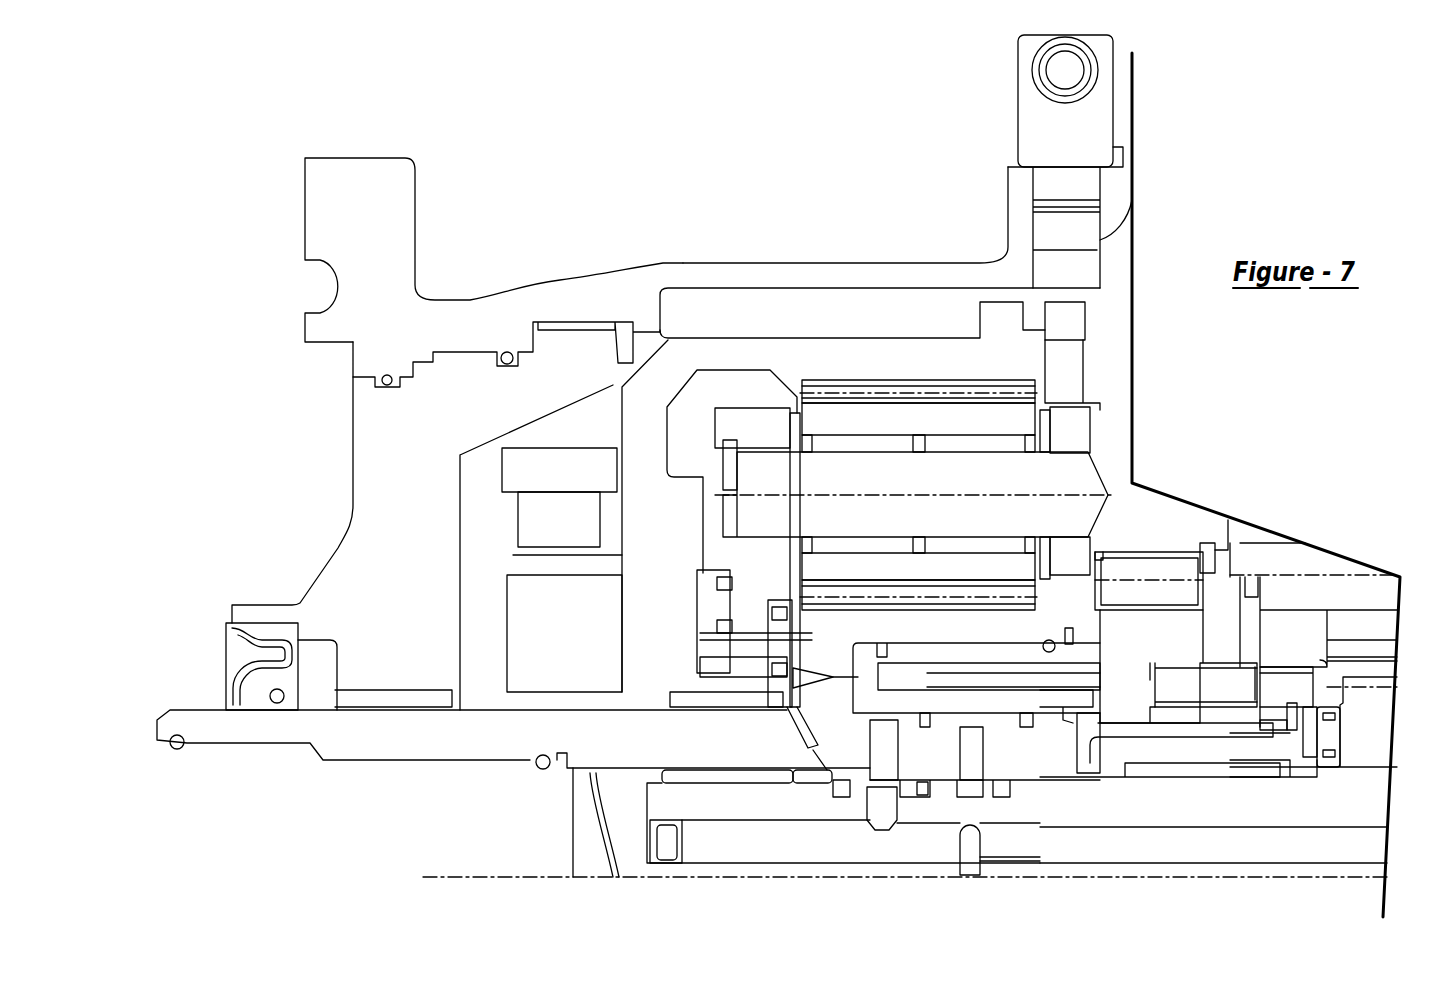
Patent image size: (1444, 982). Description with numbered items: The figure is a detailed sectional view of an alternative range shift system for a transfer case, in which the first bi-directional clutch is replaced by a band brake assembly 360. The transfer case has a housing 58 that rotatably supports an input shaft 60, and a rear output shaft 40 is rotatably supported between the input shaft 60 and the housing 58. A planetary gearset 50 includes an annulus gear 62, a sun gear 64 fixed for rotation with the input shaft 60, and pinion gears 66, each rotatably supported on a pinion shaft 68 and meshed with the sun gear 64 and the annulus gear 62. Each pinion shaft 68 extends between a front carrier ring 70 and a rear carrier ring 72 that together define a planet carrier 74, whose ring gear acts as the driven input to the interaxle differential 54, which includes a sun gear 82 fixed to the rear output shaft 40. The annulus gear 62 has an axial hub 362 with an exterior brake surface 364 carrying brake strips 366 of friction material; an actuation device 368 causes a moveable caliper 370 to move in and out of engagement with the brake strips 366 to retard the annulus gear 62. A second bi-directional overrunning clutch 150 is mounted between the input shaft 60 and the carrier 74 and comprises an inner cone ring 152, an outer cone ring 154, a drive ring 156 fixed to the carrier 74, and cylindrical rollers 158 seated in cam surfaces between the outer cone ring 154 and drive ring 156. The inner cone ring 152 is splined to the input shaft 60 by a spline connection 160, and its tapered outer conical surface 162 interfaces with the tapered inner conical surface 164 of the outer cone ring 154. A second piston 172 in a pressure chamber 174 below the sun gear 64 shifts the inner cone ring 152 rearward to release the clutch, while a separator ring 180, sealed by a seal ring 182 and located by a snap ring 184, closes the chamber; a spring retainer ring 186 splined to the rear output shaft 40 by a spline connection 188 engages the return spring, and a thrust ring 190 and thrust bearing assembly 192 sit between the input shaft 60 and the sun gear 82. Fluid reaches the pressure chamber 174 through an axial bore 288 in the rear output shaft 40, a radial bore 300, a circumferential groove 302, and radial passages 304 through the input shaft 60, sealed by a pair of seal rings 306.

The rear output shaft 40 is at (1193, 807).
The planetary gearset 50 is at (855, 333).
The interaxle differential 54 is at (1310, 562).
The housing 58 is at (390, 183).
The input shaft 60 is at (265, 732).
The annulus gear 62 is at (960, 358).
The sun gear 64 is at (812, 637).
The pinion gears 66 is at (1013, 423).
The pinion shaft 68 is at (1060, 473).
The front carrier ring 70 is at (763, 430).
The rear carrier ring 72 is at (1067, 358).
The planet carrier 74 is at (1148, 510).
The sun gear 82 is at (1370, 732).
The second bi-directional overrunning clutch 150 is at (1141, 745).
The inner cone ring 152 is at (1154, 651).
The outer cone ring 154 is at (1152, 607).
The drive ring 156 is at (1130, 557).
The cylindrical rollers 158 is at (1143, 570).
The spline connection 160 is at (1187, 725).
The tapered outer conical surface 162 is at (1177, 613).
The tapered inner conical surface 164 is at (1118, 627).
The second piston 172 is at (895, 707).
The pressure chamber 174 is at (853, 710).
The separator ring 180 is at (1035, 667).
The seal ring 182 is at (1048, 640).
The snap ring 184 is at (1082, 596).
The spring retainer ring 186 is at (1277, 680).
The spline connection 188 is at (1275, 733).
The thrust ring 190 is at (1308, 740).
The thrust bearing assembly 192 is at (1330, 733).
The axial bore 288 is at (770, 843).
The radial bore 300 is at (882, 833).
The circumferential groove 302 is at (880, 800).
The radial passages 304 is at (897, 737).
The seal rings 306 is at (833, 789).
The band brake assembly 360 is at (495, 517).
The axial hub 362 is at (595, 648).
The exterior brake surface 364 is at (583, 567).
The brake strips 366 is at (523, 567).
The actuation device 368 is at (530, 449).
The moveable caliper 370 is at (567, 523).